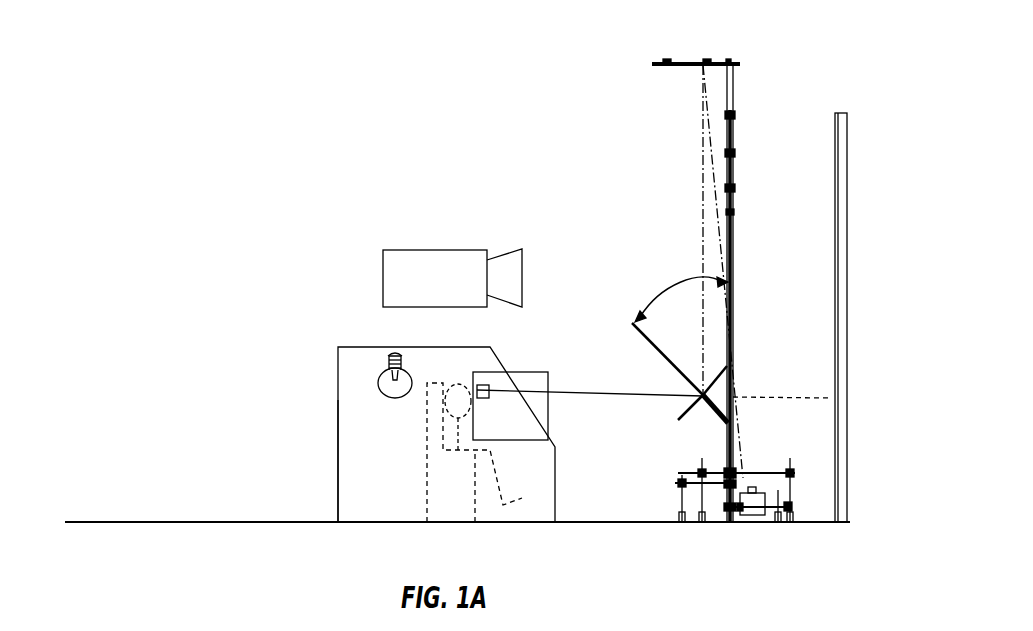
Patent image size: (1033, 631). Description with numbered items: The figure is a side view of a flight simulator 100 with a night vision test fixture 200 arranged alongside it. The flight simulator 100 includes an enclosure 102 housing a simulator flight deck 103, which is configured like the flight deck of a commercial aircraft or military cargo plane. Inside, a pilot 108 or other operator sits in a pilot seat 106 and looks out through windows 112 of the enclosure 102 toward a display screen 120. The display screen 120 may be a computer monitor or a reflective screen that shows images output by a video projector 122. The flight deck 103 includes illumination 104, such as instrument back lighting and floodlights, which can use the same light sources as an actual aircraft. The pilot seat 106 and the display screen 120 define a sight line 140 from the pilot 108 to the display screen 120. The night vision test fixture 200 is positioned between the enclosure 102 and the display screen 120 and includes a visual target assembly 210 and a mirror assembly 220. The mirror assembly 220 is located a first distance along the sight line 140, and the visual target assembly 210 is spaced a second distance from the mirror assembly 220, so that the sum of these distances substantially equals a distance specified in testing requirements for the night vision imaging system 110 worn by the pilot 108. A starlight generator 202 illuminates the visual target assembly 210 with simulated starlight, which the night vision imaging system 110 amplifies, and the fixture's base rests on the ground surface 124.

The flight simulator 100 is at (269, 164).
The enclosure 102 is at (350, 347).
The simulator flight deck 103 is at (355, 453).
The illumination 104 is at (394, 400).
The pilot seat 106 is at (440, 485).
The pilot 108 is at (455, 370).
The night vision imaging system 110 is at (483, 387).
The windows 112 is at (518, 428).
The display screen 120 is at (840, 112).
The video projector 122 is at (437, 255).
The ground surface 124 is at (612, 520).
The sight line 140 is at (571, 398).
The night vision test fixture 200 is at (713, 48).
The starlight generator 202 is at (766, 490).
The visual target assembly 210 is at (666, 72).
The mirror assembly 220 is at (708, 378).